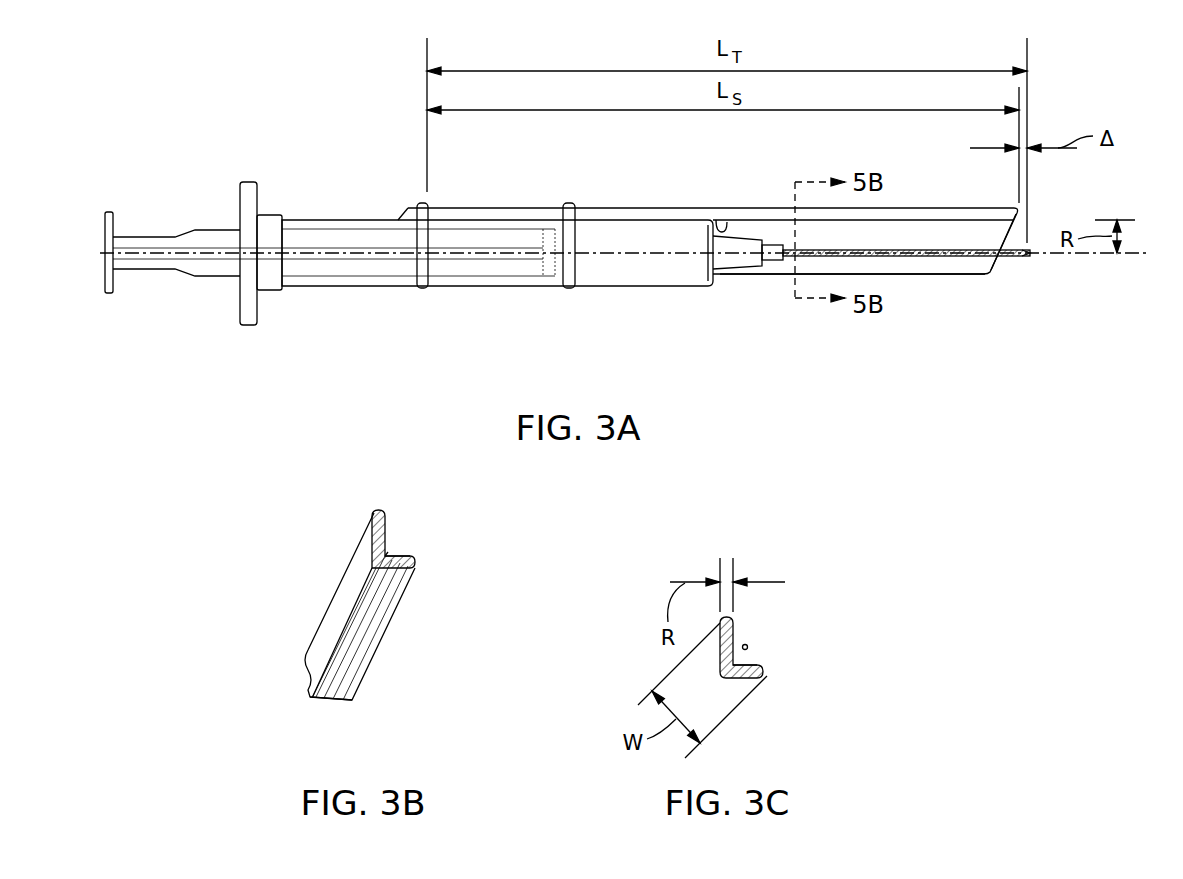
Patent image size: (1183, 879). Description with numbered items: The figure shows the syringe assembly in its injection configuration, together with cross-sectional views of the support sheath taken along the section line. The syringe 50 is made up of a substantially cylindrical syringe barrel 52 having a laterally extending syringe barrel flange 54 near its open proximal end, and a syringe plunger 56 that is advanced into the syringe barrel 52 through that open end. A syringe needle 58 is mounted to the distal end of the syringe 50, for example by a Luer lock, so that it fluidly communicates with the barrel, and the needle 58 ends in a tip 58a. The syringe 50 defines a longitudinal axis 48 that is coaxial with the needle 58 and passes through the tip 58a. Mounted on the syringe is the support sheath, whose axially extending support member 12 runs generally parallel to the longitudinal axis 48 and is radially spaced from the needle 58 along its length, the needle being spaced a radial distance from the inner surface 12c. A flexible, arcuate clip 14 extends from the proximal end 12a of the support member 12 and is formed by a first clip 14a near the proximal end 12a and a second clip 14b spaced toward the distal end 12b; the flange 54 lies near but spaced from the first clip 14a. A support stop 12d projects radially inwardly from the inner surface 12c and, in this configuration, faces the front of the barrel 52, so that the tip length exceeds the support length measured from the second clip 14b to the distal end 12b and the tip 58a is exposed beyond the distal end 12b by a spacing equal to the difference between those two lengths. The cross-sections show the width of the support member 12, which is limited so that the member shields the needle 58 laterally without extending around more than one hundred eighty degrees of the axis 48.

In FIG. 3A, the support member 12 is at (928, 209).
In FIG. 3B, the support member 12 is at (412, 565).
In FIG. 3C, the support member 12 is at (735, 670).
In FIG. 3A, the proximal end of the support member 12a is at (400, 217).
In FIG. 3A, the distal end of the support member 12b is at (1018, 228).
In FIG. 3B, the distal end of the support member 12b is at (312, 700).
In FIG. 3A, the inner surface 12c is at (967, 270).
In FIG. 3B, the inner surface 12c is at (403, 553).
In FIG. 3C, the inner surface 12c is at (742, 660).
In FIG. 3A, the support stop 12d is at (724, 229).
In FIG. 3A, the arcuate clip 14 is at (481, 334).
In FIG. 3A, the first clip 14a is at (422, 289).
In FIG. 3A, the second clip 14b is at (568, 289).
In FIG. 3A, the longitudinal axis 48 is at (1142, 250).
In FIG. 3A, the syringe 50 is at (722, 307).
In FIG. 3A, the syringe barrel 52 is at (315, 219).
In FIG. 3A, the syringe barrel flange 54 is at (248, 326).
In FIG. 3A, the syringe plunger 56 is at (165, 258).
In FIG. 3A, the syringe needle 58 is at (930, 258).
In FIG. 3B, the syringe needle 58 is at (360, 600).
In FIG. 3C, the syringe needle 58 is at (750, 645).
In FIG. 3A, the needle tip 58a is at (1030, 256).
In FIG. 3B, the needle tip 58a is at (388, 556).